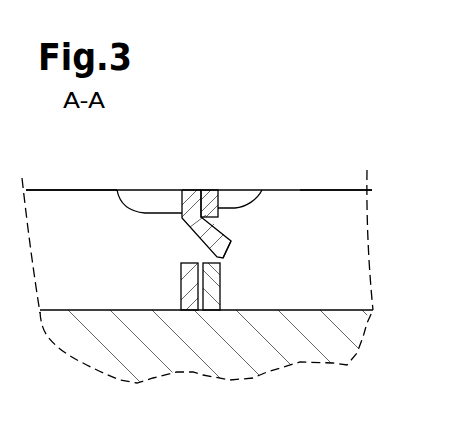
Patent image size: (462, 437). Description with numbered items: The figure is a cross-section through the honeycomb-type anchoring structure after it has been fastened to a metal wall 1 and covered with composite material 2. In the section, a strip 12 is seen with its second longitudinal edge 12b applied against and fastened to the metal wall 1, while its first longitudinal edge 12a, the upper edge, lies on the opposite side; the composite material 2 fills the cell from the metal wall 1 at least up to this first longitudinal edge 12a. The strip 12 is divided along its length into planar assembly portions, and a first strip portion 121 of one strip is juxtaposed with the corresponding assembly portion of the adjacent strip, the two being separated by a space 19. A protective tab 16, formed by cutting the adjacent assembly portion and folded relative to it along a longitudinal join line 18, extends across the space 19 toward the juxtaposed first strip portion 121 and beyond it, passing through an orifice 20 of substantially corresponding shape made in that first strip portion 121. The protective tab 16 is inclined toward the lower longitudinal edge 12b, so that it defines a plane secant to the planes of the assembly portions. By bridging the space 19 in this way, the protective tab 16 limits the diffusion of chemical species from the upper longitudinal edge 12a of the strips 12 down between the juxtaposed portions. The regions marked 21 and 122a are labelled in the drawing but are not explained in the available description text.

The metal wall 1 is at (348, 325).
The composite material 2 is at (88, 263).
The strip 12 is at (213, 180).
The first longitudinal edge 12a is at (186, 192).
The second longitudinal edge 12b is at (190, 310).
The protective tab 16 is at (230, 242).
The longitudinal join line 18 is at (185, 222).
The space 19 is at (200, 190).
The orifice 20 is at (222, 265).
The top surface 21 is at (348, 210).
The first strip portion 121 is at (118, 190).
The right recess 122a is at (258, 190).